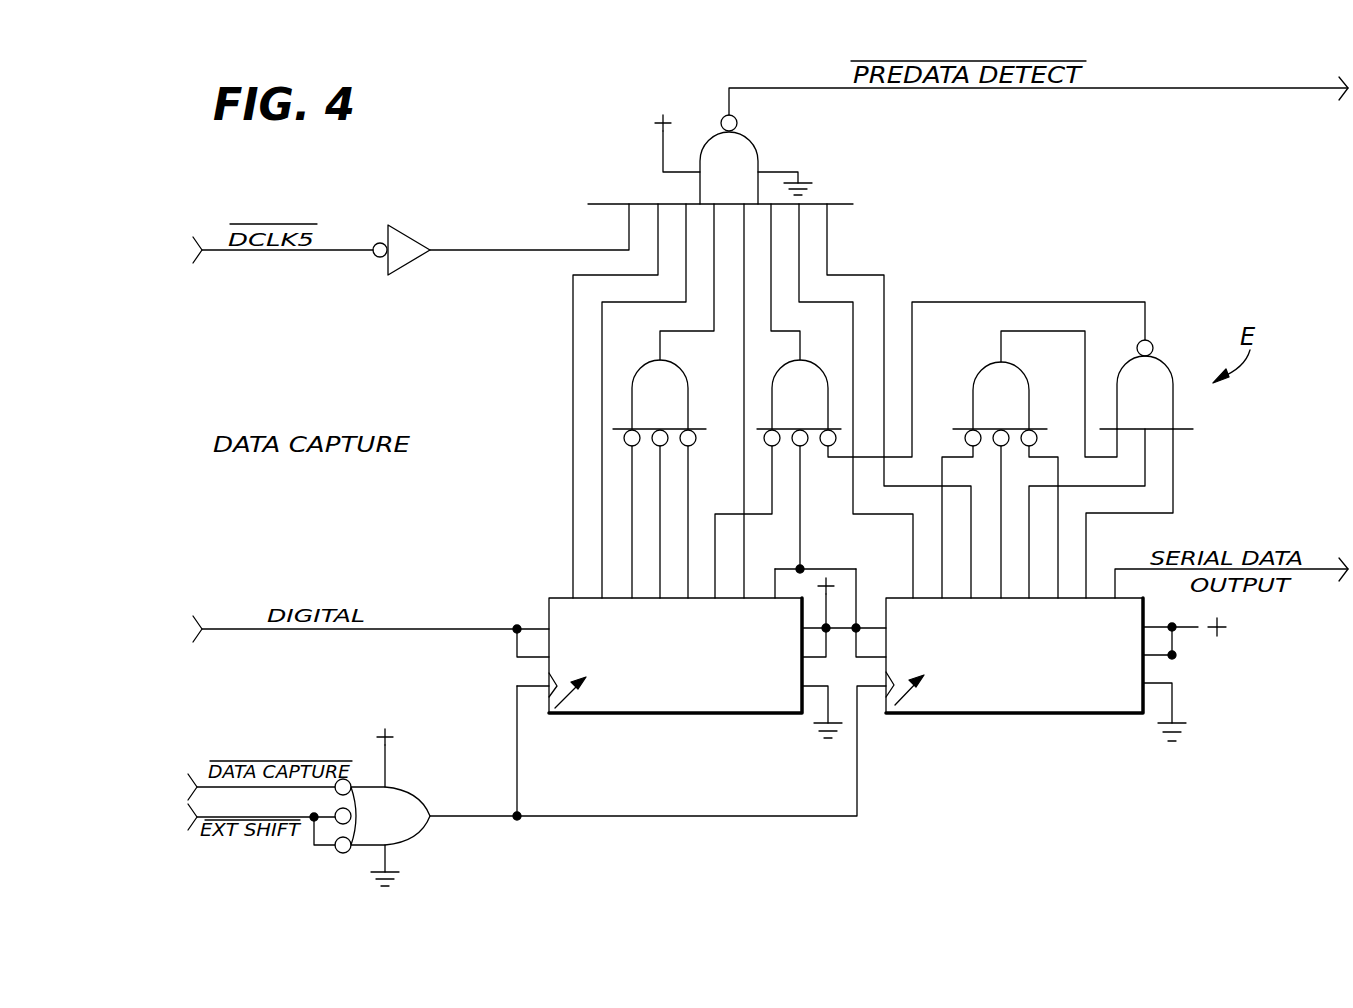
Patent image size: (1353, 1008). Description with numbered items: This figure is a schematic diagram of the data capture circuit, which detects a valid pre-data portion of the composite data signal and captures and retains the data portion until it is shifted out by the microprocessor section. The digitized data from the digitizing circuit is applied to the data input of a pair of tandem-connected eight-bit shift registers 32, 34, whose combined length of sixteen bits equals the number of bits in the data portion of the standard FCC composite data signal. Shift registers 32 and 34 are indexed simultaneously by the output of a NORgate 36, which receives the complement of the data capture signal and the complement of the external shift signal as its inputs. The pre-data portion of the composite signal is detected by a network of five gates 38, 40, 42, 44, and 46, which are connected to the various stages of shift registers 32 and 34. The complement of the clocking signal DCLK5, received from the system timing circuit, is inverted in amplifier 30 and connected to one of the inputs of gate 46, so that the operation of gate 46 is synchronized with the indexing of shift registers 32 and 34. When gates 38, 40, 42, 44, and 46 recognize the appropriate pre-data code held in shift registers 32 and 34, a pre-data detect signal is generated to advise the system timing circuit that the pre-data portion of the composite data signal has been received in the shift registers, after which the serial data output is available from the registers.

The amplifier 30 is at (447, 224).
The shift register 32 is at (673, 710).
The shift register 34 is at (1020, 714).
The NORgate 36 is at (417, 798).
The gate 38 is at (659, 403).
The gate 40 is at (799, 403).
The gate 42 is at (1000, 404).
The gate 44 is at (1146, 384).
The gate 46 is at (1001, 146).